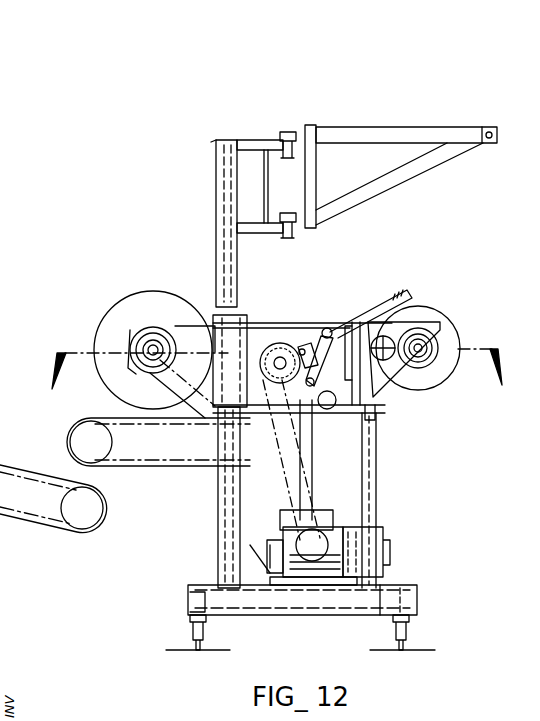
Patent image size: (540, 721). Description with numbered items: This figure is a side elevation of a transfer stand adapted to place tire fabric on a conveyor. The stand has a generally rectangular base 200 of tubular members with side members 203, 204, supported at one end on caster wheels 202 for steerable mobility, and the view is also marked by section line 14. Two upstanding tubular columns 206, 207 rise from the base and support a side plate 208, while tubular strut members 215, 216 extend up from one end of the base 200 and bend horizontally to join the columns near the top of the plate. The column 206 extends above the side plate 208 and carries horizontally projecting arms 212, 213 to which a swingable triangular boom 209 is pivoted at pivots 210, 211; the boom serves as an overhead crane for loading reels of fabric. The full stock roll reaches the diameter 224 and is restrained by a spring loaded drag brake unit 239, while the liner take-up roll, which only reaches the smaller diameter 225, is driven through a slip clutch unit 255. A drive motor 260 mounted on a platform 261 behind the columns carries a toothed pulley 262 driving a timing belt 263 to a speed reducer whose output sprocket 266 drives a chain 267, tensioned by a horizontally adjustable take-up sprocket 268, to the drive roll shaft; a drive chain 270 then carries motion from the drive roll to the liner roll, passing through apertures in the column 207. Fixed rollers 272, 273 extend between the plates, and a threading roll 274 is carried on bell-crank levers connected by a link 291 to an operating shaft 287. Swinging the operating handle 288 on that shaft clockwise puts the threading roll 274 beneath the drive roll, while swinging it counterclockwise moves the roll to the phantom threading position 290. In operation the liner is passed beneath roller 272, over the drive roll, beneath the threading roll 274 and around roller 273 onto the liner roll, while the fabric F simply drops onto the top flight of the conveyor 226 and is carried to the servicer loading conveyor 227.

The base 200 is at (420, 600).
The caster wheels 202 is at (410, 644).
The side member 203 is at (188, 600).
The side member 204 is at (414, 585).
The column 206 is at (218, 270).
The column 207 is at (378, 496).
The side plate 208 is at (398, 396).
The triangular boom 209 is at (392, 186).
The pivot 210 is at (288, 158).
The pivot 211 is at (288, 238).
The arm 212 is at (262, 142).
The arm 213 is at (258, 236).
The tubular strut member 215 is at (218, 504).
The tubular strut member 216 is at (378, 436).
The full stock roll diameter 224 is at (135, 298).
The full liner roll diameter 225 is at (462, 332).
The conveyor 226 is at (148, 466).
The servicer loading conveyor 227 is at (28, 524).
The spring loaded drag brake unit 239 is at (175, 334).
The slip clutch unit 255 is at (405, 330).
The drive motor 260 is at (388, 530).
The platform 261 is at (330, 610).
The toothed pulley 262 is at (262, 548).
The timing belt 263 is at (275, 510).
The sprocket 266 is at (330, 514).
The chain 267 is at (326, 412).
The take-up sprocket 268 is at (240, 335).
The drive chain 270 is at (410, 380).
The roller 272 is at (224, 424).
The roller 273 is at (376, 420).
The threading roll 274 is at (272, 425).
The operating shaft 287 is at (330, 326).
The operating handle 288 is at (404, 288).
The threading position 290 is at (310, 456).
The link 291 is at (314, 342).
The section line 14 is at (276, 369).
The fabric F is at (172, 426).